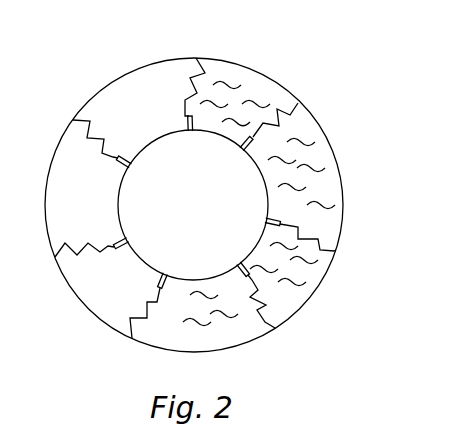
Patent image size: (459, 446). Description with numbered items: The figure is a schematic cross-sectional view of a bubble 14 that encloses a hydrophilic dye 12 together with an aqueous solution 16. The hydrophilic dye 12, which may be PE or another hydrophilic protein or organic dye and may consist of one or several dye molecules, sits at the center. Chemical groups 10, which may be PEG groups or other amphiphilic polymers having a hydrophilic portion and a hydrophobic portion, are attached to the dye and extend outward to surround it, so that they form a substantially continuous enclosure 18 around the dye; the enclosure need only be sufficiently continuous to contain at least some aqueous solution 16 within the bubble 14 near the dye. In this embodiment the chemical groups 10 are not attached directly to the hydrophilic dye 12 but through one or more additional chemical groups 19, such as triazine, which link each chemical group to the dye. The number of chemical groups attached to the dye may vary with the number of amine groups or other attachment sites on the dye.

The chemical groups 10 is at (298, 104).
The hydrophilic dye 12 is at (206, 216).
The bubble 14 is at (310, 40).
The aqueous solution 16 is at (315, 168).
The substantially continuous enclosure 18 is at (307, 300).
The additional chemical groups 19 is at (182, 121).